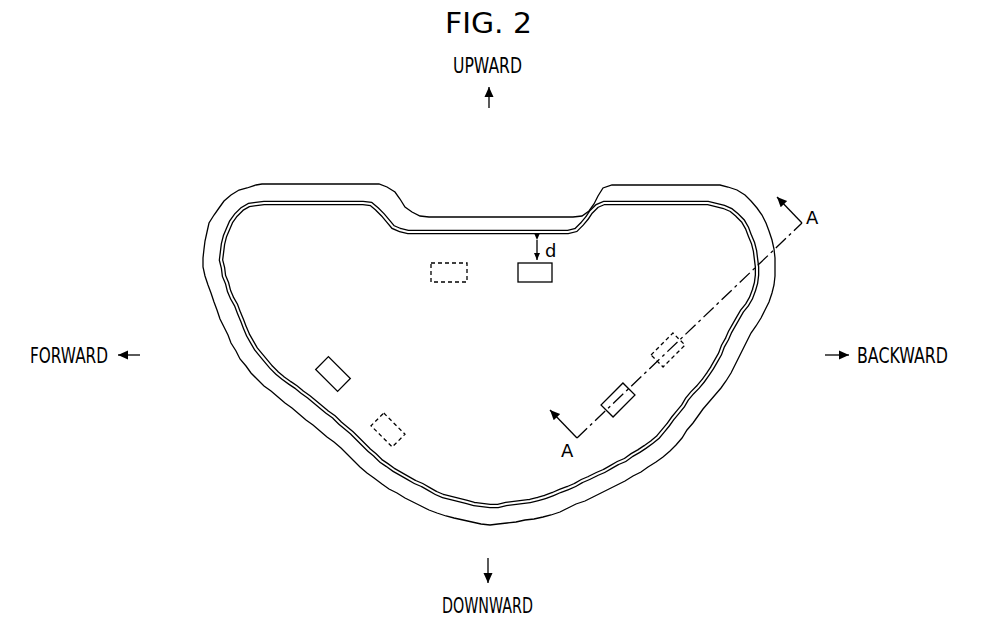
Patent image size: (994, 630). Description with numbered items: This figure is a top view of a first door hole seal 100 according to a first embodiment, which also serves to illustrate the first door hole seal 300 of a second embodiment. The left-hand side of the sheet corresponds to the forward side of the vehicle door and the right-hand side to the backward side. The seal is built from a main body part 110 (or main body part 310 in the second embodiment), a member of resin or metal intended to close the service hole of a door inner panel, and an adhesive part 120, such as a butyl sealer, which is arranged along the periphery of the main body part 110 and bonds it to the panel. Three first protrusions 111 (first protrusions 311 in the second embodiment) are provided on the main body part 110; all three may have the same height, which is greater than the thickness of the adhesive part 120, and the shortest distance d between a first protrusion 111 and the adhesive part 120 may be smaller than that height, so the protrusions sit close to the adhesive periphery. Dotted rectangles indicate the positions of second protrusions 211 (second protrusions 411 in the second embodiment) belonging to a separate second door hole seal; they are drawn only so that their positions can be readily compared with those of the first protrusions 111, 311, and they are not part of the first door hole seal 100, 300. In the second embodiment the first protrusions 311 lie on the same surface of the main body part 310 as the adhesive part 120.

The first door hole seal 100 is at (521, 315).
The first door hole seal 300 is at (492, 332).
The main body part 110 is at (489, 322).
The main body part 310 is at (489, 322).
The adhesive part 120 is at (674, 202).
The first protrusions 111 is at (467, 299).
The first protrusions 311 is at (553, 271).
The second protrusions 211 is at (521, 315).
The second protrusions 411 is at (447, 263).